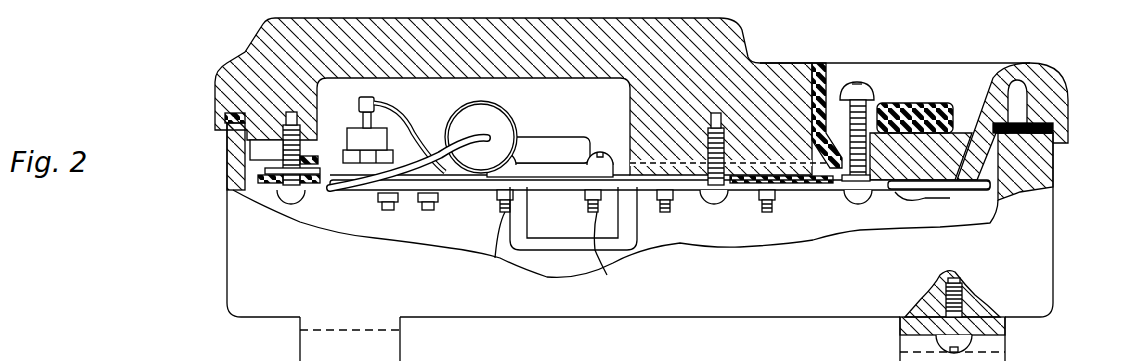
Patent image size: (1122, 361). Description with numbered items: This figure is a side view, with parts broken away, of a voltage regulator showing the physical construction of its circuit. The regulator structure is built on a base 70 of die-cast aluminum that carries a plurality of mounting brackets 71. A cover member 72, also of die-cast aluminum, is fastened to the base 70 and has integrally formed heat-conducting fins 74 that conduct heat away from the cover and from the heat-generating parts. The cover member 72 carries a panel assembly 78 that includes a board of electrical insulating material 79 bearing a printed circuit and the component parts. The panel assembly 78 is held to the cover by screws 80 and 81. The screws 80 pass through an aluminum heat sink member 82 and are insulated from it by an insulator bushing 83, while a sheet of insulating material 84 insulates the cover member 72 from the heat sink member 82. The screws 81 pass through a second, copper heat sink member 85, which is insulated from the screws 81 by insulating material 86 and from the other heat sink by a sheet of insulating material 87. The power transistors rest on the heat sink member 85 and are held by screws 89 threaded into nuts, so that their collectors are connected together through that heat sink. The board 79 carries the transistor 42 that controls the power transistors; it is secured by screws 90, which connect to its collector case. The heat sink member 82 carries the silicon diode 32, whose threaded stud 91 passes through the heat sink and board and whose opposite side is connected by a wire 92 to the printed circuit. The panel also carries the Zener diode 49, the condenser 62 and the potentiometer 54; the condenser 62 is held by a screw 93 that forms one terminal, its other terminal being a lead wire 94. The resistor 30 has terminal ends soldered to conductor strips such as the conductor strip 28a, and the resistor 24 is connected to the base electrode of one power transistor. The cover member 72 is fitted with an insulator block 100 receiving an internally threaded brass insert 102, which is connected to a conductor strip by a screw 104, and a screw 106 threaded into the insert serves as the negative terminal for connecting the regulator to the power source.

The resistor 24 is at (688, 197).
The conductor strip 28a is at (647, 354).
The resistor 30 is at (903, 203).
The silicon diode 32 is at (355, 127).
The transistor 42 is at (558, 147).
The Zener diode 49 is at (631, 316).
The variable resistor or potentiometer 54 is at (627, 233).
The condenser 62 is at (510, 120).
The base 70 is at (1037, 264).
The mounting brackets 71 is at (387, 342).
The cover member 72 is at (1045, 83).
The heat-conducting fins 74 is at (743, 33).
The panel assembly 78 is at (1086, 180).
The sheet or board of electrical insulating material 79 is at (750, 167).
The screws 80 is at (283, 145).
The screws 81 is at (723, 143).
The metal heat sink member 82 is at (262, 178).
The insulator bushing 83 is at (305, 165).
The sheet of insulating material 84 is at (318, 166).
The second metal heat sink member 85 is at (643, 167).
The insulating material 86 is at (705, 165).
The sheet of insulating material 87 is at (780, 175).
The screws 89 is at (675, 208).
The screws 90 is at (457, 360).
The threaded stud 91 is at (370, 213).
The wire 92 is at (397, 117).
The screw or bolt 93 is at (432, 213).
The lead wire 94 is at (435, 163).
The insulator block 100 is at (817, 70).
The brass insert member 102 is at (880, 105).
The screws 104 is at (870, 178).
The screw / negative terminal 106 is at (858, 115).